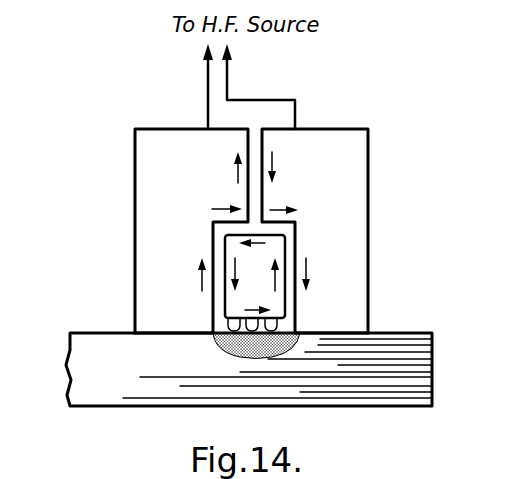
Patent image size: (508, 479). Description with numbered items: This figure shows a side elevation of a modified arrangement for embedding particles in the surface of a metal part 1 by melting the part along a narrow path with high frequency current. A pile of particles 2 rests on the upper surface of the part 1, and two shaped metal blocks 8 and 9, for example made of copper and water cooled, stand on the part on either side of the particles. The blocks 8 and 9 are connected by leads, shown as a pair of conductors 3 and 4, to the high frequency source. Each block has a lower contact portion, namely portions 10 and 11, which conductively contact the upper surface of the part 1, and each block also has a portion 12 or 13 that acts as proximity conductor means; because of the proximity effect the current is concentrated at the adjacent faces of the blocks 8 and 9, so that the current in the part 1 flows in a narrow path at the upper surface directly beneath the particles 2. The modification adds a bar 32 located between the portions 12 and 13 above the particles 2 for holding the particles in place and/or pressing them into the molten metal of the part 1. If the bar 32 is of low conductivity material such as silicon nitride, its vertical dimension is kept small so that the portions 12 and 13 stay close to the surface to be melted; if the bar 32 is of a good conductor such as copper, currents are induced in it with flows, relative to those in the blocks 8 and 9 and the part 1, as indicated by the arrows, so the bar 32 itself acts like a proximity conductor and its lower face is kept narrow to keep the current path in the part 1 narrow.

The metal part 1 is at (393, 396).
The particles 2 is at (290, 340).
The conductor 3 is at (205, 79).
The conductor 4 is at (230, 78).
The shaped metal block 8 is at (355, 177).
The shaped metal block 9 is at (143, 185).
The contact portion 10 is at (352, 313).
The contact portion 11 is at (146, 315).
The proximity conductor portion 12 is at (300, 215).
The proximity conductor portion 13 is at (222, 218).
The bar 32 is at (240, 297).